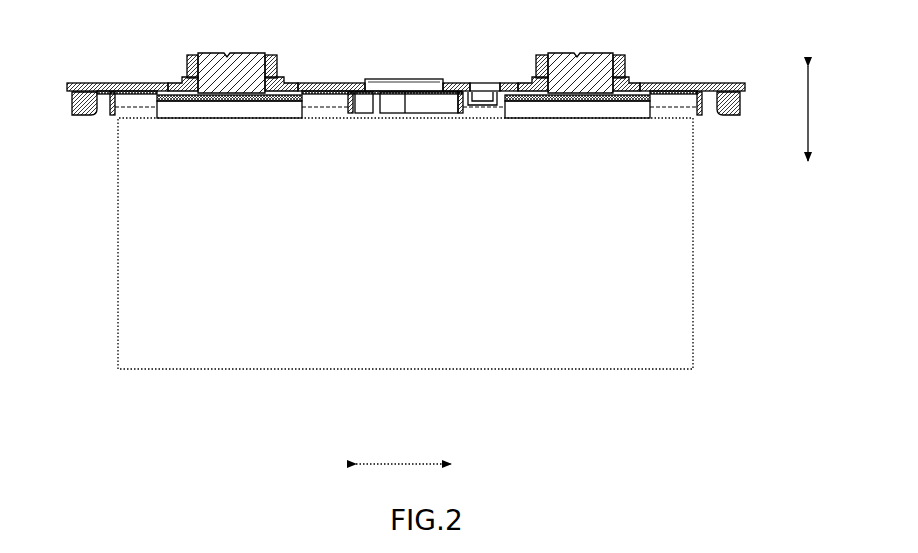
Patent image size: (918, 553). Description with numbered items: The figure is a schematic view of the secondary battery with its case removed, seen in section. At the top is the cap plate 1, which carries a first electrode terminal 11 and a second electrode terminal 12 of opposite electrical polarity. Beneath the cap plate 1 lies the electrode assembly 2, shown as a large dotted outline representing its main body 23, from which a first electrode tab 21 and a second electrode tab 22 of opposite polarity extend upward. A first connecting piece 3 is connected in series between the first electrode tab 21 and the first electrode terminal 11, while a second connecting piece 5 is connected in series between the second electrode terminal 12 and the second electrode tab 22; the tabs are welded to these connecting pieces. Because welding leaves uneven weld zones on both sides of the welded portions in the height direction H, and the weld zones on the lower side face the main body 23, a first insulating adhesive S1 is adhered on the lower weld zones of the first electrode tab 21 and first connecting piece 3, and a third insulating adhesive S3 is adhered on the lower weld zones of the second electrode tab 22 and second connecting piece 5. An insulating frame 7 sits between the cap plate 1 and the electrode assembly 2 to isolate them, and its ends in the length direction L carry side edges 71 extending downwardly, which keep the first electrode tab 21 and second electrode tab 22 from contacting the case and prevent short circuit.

The cap plate 1 is at (130, 83).
The electrode assembly 2 is at (100, 283).
The first connecting piece 3 is at (637, 80).
The second connecting piece 5 is at (300, 86).
The insulating frame 7 is at (517, 83).
The first electrode terminal 11 is at (567, 53).
The second electrode terminal 12 is at (207, 54).
The first electrode tab 21 is at (587, 103).
The second electrode tab 22 is at (240, 103).
The main body 23 is at (638, 300).
The side edges 71 is at (113, 115).
The first insulating adhesive S1 is at (537, 100).
The third insulating adhesive S3 is at (260, 103).
The height direction H is at (819, 113).
The length direction L is at (403, 451).